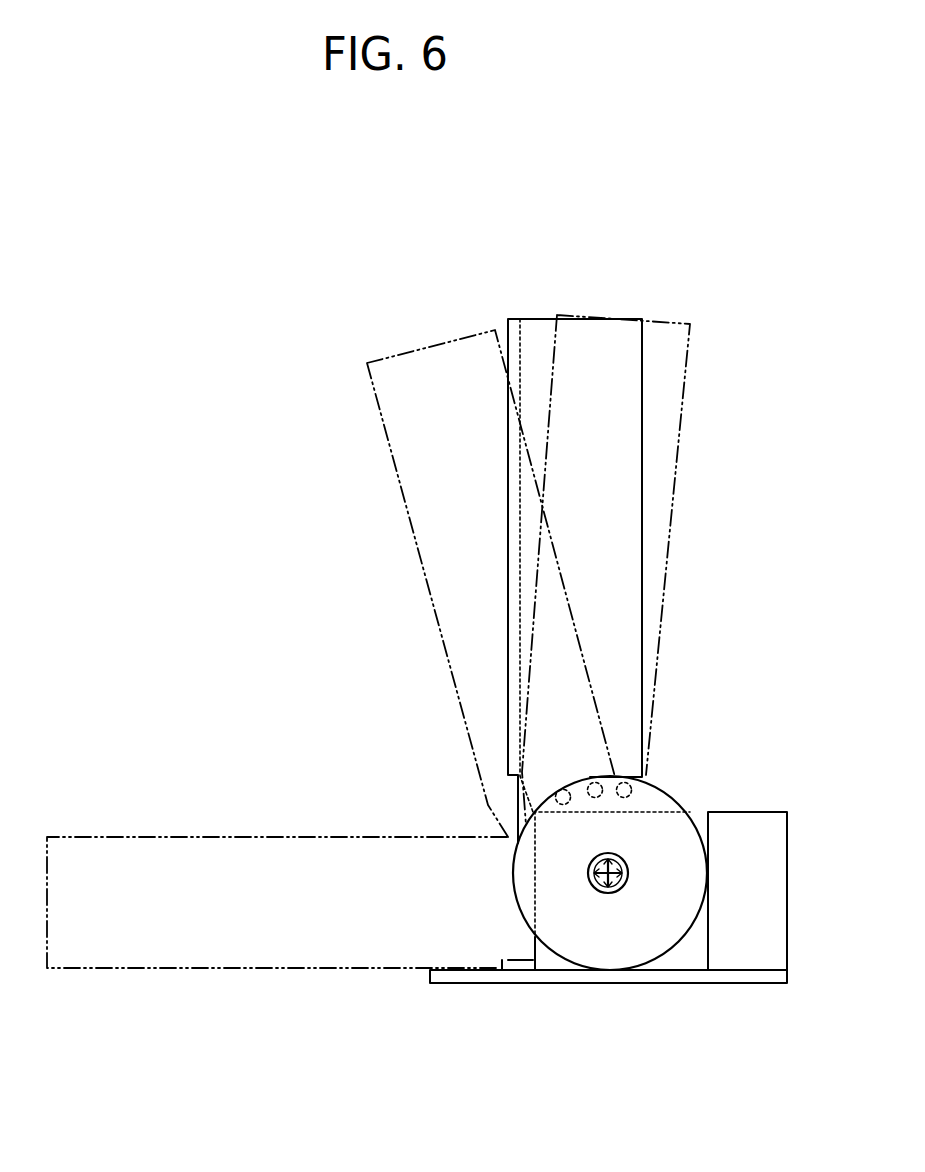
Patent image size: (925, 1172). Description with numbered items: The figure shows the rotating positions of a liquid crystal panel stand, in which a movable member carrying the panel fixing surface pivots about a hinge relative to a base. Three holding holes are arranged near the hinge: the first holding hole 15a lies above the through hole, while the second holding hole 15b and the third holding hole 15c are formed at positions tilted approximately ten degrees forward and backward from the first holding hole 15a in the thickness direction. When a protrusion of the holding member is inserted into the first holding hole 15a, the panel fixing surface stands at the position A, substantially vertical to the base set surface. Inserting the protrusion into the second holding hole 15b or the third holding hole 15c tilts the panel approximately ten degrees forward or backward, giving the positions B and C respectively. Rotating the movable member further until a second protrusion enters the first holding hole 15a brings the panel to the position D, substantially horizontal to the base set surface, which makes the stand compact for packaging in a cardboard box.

The position A is at (537, 318).
The position B is at (410, 347).
The position C is at (663, 317).
The position D is at (125, 832).
The first holding hole 15a is at (597, 782).
The second holding hole 15b is at (556, 790).
The third holding hole 15c is at (640, 780).